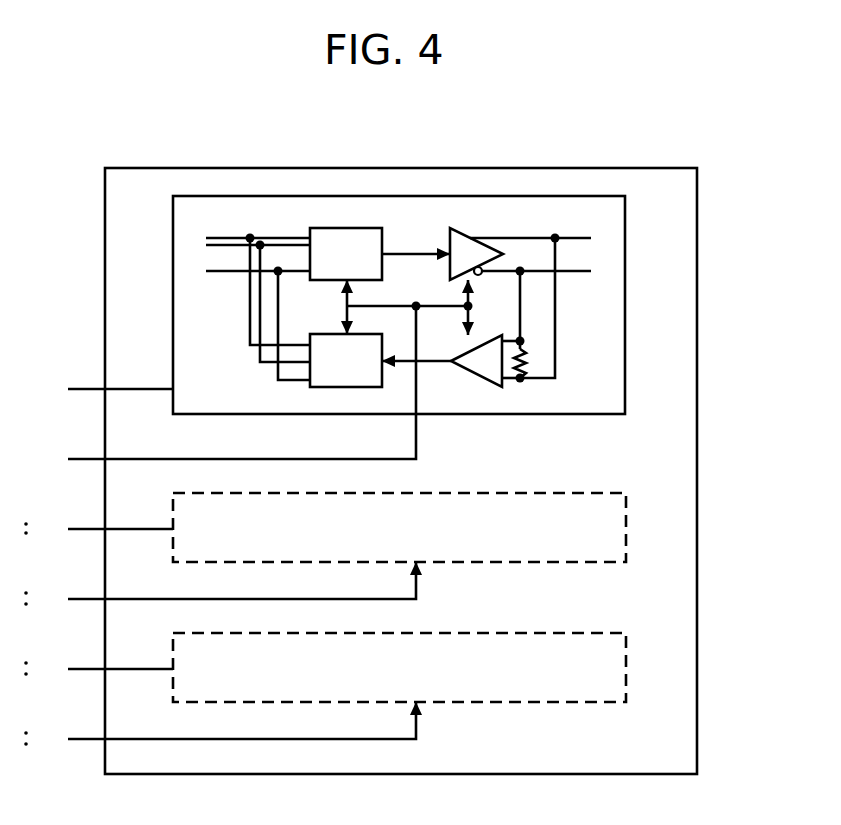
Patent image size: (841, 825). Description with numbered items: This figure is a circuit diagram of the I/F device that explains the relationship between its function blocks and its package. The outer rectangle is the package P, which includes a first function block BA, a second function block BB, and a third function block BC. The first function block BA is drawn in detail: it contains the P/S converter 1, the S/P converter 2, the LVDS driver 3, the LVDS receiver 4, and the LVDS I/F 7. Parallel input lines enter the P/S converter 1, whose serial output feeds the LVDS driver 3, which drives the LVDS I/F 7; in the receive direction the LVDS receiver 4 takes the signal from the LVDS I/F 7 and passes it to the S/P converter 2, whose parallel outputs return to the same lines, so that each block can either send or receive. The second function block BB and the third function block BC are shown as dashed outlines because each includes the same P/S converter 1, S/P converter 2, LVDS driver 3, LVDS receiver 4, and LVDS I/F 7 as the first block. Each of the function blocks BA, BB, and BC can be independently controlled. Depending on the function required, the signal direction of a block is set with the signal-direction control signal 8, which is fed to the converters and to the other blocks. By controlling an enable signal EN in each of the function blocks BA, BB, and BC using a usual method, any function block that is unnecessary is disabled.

The P/S converter 1 is at (333, 227).
The S/P converter 2 is at (358, 386).
The LVDS driver 3 is at (449, 232).
The LVDS receiver 4 is at (478, 382).
The LVDS I/F 7 is at (570, 237).
The signal-direction control signal 8 is at (233, 389).
The enable signal EN is at (104, 389).
The first function block BA is at (624, 247).
The second function block BB is at (625, 517).
The third function block BC is at (625, 657).
The package P is at (696, 738).